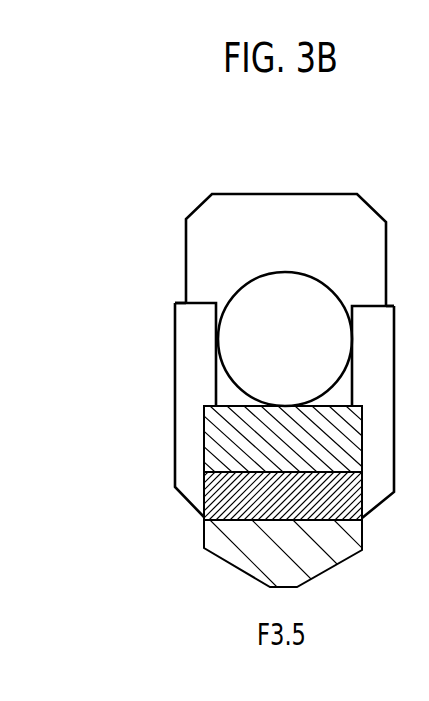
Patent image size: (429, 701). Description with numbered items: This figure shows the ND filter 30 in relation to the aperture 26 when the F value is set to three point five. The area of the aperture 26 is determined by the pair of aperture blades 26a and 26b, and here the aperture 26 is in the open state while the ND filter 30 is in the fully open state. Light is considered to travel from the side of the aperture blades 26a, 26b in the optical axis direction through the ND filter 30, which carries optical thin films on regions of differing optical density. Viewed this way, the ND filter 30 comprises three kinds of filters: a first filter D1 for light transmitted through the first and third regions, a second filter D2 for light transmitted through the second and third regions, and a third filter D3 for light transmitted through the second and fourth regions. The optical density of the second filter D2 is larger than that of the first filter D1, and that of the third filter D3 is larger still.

The aperture 26 is at (321, 299).
The aperture blade 26a is at (243, 194).
The aperture blade 26b is at (193, 302).
The ND filter 30 is at (363, 531).
The first filter D1 is at (204, 436).
The second filter D2 is at (204, 491).
The third filter D3 is at (204, 534).